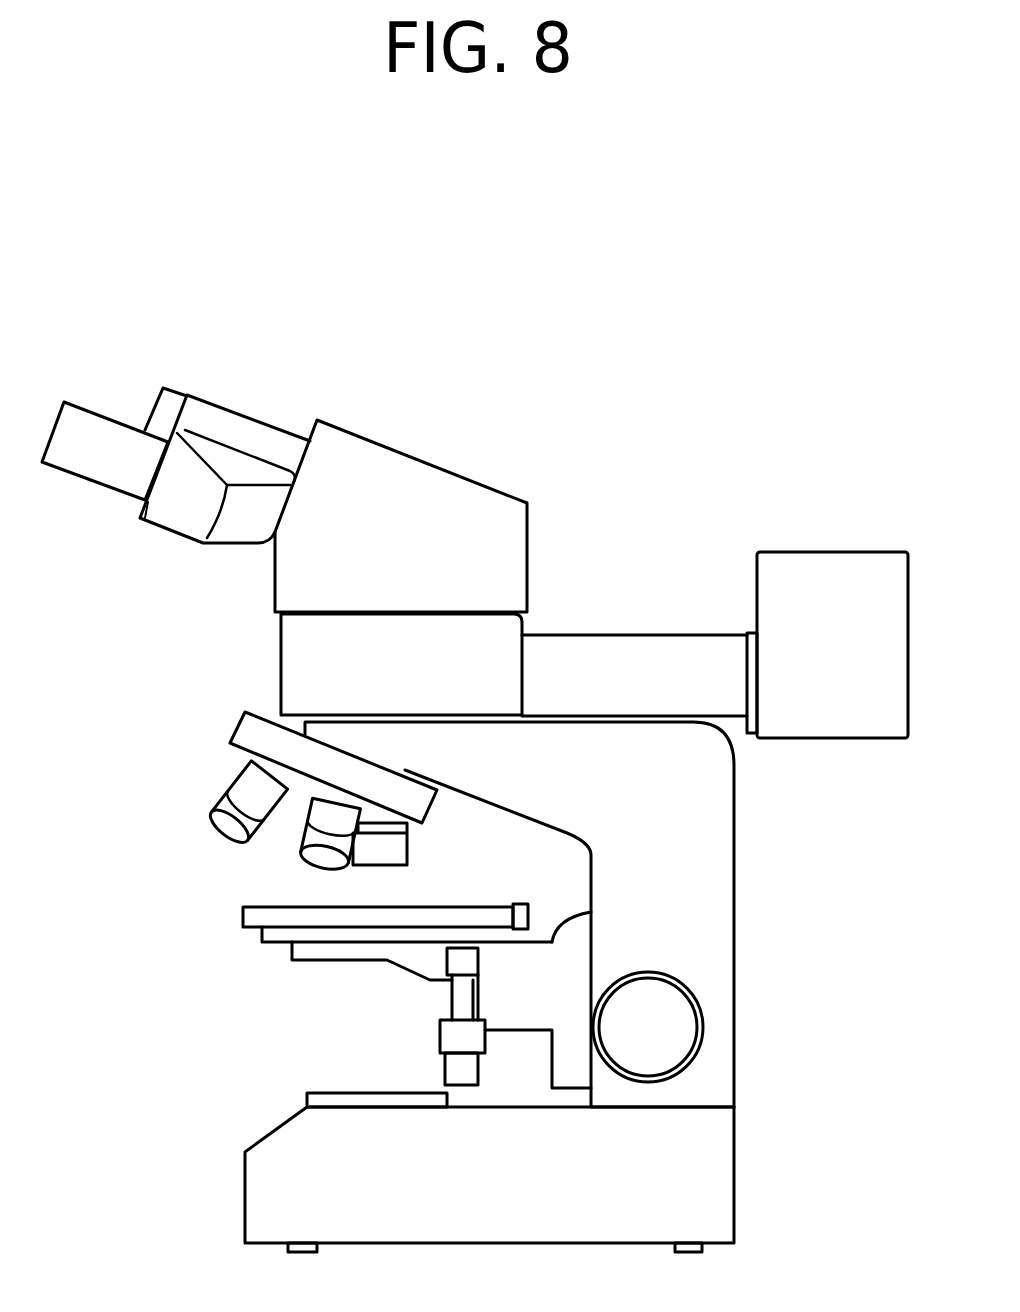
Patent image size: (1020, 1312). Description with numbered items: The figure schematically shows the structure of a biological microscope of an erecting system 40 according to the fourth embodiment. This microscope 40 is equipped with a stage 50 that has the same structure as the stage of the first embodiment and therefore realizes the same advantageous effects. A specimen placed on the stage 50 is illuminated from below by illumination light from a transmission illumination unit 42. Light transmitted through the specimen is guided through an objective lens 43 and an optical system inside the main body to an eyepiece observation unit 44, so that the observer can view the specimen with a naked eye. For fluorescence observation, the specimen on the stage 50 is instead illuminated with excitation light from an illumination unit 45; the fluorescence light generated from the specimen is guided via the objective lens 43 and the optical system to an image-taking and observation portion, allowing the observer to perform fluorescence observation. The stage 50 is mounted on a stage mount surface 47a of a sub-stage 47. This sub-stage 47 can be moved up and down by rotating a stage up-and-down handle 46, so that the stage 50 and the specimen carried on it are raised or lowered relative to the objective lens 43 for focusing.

The biological microscope of an erecting system 40 is at (475, 748).
The transmission illumination unit 42 is at (327, 1098).
The objective lens 43 is at (233, 798).
The eyepiece observation unit 44 is at (94, 428).
The illumination unit 45 is at (860, 565).
The stage up-and-down handle 46 is at (675, 1033).
The sub-stage 47 is at (568, 914).
The stage mount surface 47a is at (592, 912).
The stage 50 is at (243, 918).